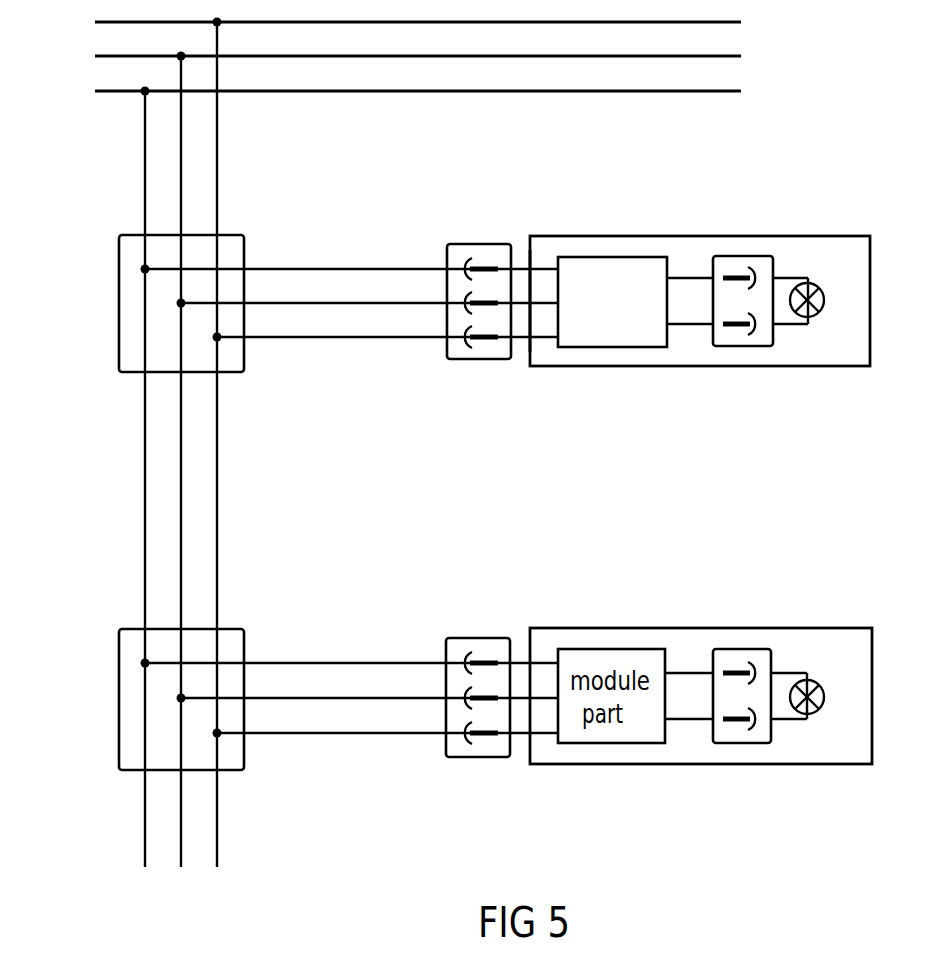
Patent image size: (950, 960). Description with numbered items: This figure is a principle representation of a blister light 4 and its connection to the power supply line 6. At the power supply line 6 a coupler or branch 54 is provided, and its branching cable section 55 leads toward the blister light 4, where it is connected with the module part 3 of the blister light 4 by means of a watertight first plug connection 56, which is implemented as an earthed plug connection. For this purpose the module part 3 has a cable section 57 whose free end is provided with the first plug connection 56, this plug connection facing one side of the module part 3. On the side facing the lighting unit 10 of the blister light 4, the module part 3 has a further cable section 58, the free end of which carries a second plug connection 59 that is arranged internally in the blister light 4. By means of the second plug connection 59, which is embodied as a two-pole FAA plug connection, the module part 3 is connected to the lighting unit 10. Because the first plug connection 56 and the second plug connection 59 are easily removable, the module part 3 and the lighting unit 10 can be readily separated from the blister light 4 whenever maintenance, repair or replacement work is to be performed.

The module part 3 is at (617, 348).
The blister light 4 is at (611, 236).
The power supply line 6 is at (125, 488).
The lighting unit 10 is at (824, 295).
The coupler or branch 54 is at (233, 235).
The branching cable section 55 is at (338, 338).
The first plug connection 56 is at (481, 360).
The cable section 57 is at (547, 340).
The cable section 58 is at (692, 325).
The second plug connection 59 is at (751, 347).